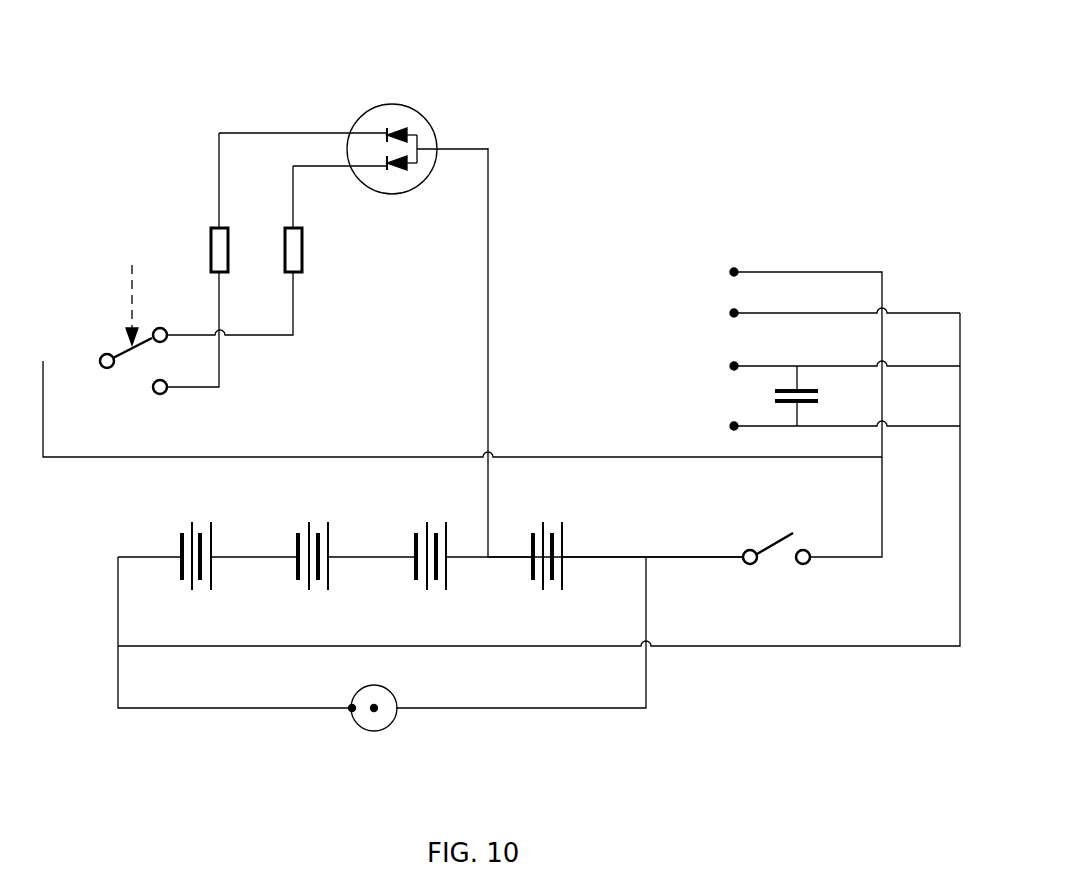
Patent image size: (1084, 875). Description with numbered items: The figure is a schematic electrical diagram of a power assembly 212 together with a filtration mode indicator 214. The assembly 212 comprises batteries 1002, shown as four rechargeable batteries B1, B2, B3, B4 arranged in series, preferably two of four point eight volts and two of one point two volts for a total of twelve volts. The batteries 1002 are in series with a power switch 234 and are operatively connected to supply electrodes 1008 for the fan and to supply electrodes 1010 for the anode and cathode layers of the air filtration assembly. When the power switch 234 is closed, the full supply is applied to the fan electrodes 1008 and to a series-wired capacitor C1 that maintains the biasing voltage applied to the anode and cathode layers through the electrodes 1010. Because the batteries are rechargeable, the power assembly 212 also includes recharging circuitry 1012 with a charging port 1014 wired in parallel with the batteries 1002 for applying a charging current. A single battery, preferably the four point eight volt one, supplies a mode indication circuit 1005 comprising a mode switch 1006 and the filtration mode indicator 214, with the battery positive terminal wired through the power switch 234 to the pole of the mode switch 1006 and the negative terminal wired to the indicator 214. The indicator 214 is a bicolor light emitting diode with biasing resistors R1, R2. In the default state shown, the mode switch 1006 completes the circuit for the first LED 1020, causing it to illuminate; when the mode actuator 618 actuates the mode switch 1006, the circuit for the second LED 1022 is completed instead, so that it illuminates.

The mode indication circuit 1005 is at (166, 180).
The second LED 1022 is at (398, 128).
The filtration mode indicator 214 is at (405, 105).
The first LED 1020 is at (398, 168).
The mode actuator 618 is at (130, 280).
The mode switch 1006 is at (104, 369).
The power assembly 212 is at (392, 362).
The supply electrodes for the fan 1008 is at (718, 247).
The supply electrodes for the anode and cathode layers 1010 is at (718, 355).
The power switch 234 is at (750, 548).
The battery 1002 is at (162, 523).
The charging port 1014 is at (377, 686).
The recharging circuitry 1012 is at (366, 754).
The biasing resistor R1 is at (275, 250).
The biasing resistor R2 is at (202, 250).
The capacitor C1 is at (815, 396).
The battery B1 is at (623, 546).
The battery B2 is at (460, 546).
The battery B3 is at (342, 546).
The battery B4 is at (208, 546).